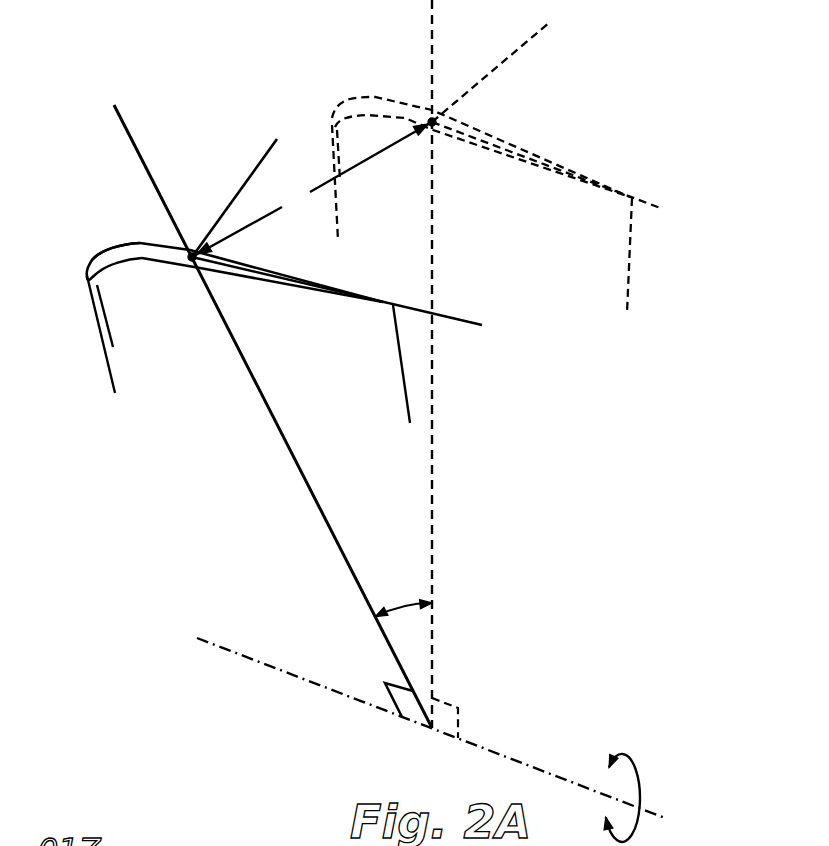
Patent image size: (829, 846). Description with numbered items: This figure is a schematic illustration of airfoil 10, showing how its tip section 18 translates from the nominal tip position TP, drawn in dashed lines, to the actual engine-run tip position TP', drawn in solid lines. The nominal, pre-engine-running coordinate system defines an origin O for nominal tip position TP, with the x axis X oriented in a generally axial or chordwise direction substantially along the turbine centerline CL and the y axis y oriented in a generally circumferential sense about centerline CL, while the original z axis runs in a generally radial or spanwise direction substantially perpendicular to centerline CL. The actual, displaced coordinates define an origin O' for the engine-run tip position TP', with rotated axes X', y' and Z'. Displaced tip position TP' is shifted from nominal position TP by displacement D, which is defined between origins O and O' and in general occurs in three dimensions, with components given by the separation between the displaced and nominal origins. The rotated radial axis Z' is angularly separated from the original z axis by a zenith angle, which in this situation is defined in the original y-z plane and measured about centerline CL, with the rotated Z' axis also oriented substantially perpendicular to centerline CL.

The airfoil 10 is at (248, 333).
The tip section 18 is at (132, 250).
The nominal tip position TP is at (443, 188).
The displaced tip position TP' is at (51, 245).
The origin O is at (411, 87).
The displaced origin O' is at (176, 288).
The displacement D is at (312, 189).
The x axis X is at (551, 165).
The x' axis X' is at (350, 299).
The y axis y is at (495, 72).
The y' axis y' is at (234, 193).
The z' axis Z' is at (273, 410).
The centerline CL is at (445, 738).